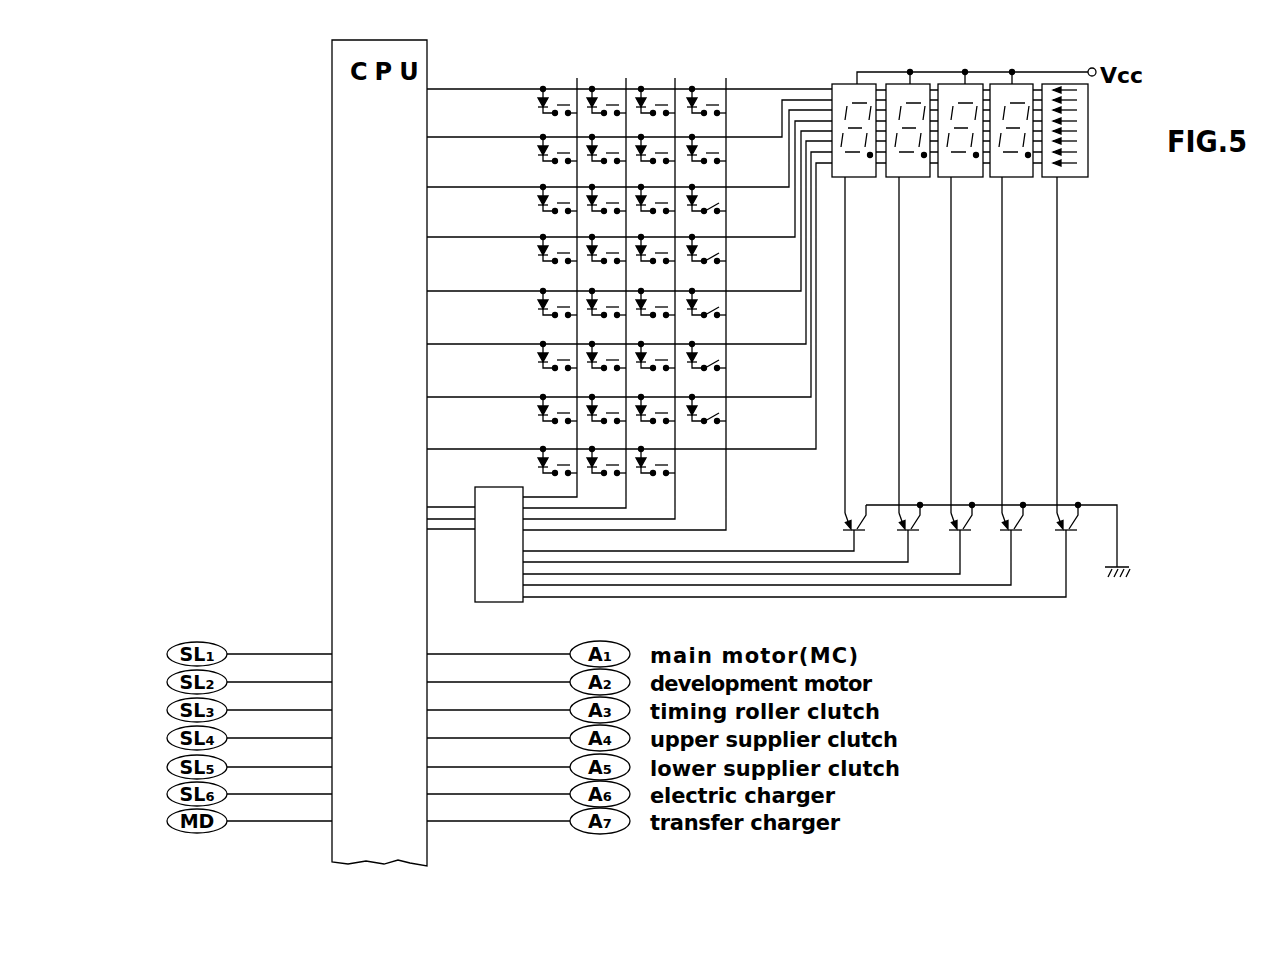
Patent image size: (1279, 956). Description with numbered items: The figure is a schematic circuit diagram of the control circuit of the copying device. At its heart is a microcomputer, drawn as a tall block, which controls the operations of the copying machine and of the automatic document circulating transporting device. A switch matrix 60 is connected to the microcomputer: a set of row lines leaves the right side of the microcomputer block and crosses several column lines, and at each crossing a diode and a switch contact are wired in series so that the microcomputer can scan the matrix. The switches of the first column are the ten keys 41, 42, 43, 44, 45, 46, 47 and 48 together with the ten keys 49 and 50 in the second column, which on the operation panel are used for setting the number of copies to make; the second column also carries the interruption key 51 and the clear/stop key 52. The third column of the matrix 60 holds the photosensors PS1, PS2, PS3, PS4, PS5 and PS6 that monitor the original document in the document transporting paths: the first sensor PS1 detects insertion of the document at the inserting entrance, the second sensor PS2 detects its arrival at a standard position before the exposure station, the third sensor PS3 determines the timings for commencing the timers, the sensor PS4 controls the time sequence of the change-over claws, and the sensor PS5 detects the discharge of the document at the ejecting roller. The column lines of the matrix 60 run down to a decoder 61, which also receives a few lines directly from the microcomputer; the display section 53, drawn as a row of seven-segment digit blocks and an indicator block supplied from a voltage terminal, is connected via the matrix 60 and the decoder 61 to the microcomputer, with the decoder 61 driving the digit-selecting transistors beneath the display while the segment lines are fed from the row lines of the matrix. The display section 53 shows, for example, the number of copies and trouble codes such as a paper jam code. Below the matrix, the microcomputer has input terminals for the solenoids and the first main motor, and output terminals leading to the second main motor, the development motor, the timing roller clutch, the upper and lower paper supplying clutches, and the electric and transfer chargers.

The ten key 41 is at (557, 114).
The ten key 42 is at (557, 162).
The ten key 43 is at (557, 212).
The ten key 44 is at (557, 262).
The ten key 45 is at (557, 316).
The ten key 46 is at (557, 369).
The ten key 47 is at (557, 422).
The ten key 48 is at (557, 474).
The ten key 49 is at (606, 114).
The ten key 50 is at (606, 162).
The interruption key 51 is at (606, 212).
The clear/stop key 52 is at (606, 262).
The display section 53 is at (980, 178).
The switch matrix 60 is at (640, 66).
The decoder 61 is at (475, 580).
The first photosensor PS1 is at (654, 114).
The second photosensor PS2 is at (654, 162).
The third photosensor PS3 is at (654, 212).
The fourth photosensor PS4 is at (654, 262).
The fifth photosensor PS5 is at (654, 316).
The sixth photosensor PS6 is at (654, 369).